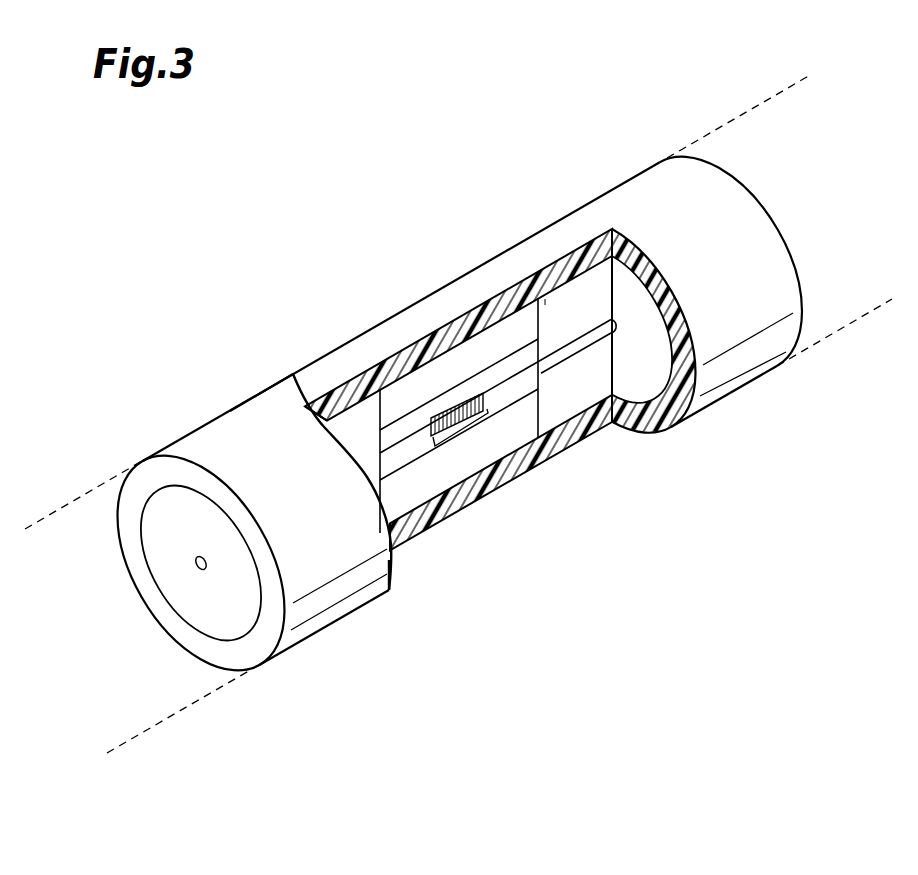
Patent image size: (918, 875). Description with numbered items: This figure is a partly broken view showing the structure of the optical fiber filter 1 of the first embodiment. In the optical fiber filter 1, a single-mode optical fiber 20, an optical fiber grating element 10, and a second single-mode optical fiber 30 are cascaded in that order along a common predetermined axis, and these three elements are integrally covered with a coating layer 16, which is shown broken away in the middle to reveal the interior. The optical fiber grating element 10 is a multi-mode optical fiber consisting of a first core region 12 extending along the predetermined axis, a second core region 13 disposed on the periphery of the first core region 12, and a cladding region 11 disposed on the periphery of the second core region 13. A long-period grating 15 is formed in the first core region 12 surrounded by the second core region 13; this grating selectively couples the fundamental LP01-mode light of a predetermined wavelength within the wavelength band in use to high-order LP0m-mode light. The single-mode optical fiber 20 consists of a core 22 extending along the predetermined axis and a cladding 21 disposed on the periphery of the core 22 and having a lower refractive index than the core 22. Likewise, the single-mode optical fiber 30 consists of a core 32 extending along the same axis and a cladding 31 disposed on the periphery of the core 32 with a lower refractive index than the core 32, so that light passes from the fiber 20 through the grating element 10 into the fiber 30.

The optical fiber filter 1 is at (458, 413).
The optical fiber grating element 10 is at (507, 329).
The cladding region 11 is at (460, 357).
The first core region 12 is at (408, 445).
The second core region 13 is at (412, 421).
The long-period grating 15 is at (464, 432).
The coating layer 16 is at (321, 364).
The single-mode optical fiber 20 is at (361, 408).
The cladding 21 is at (334, 397).
The core 22 is at (390, 476).
The single-mode optical fiber 30 is at (592, 287).
The cavity 31 is at (557, 304).
The core 32 is at (580, 353).